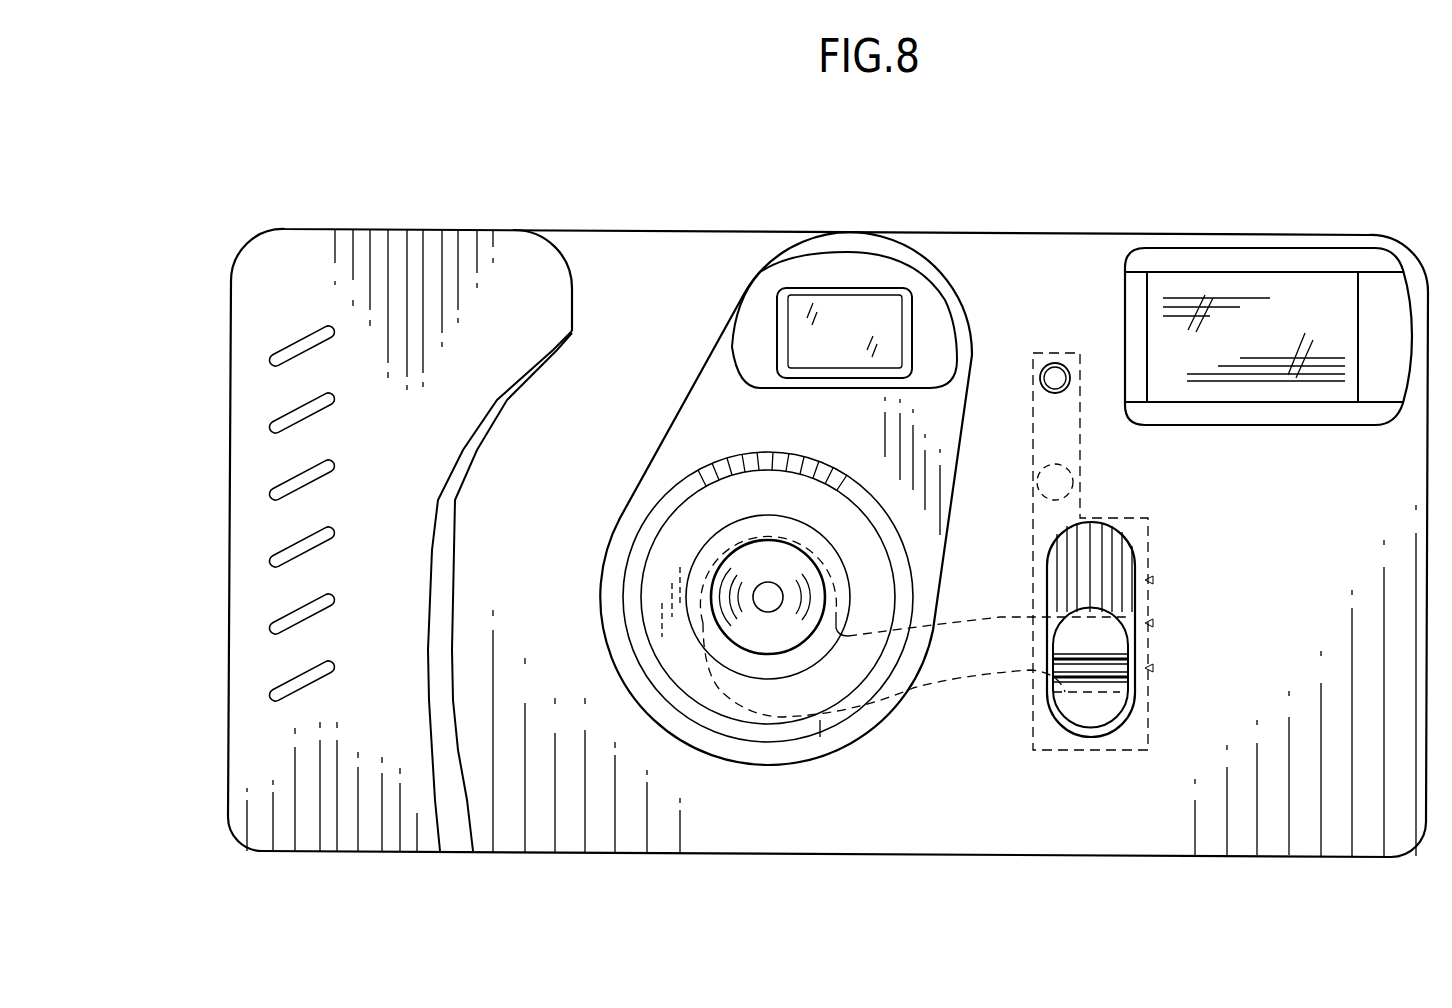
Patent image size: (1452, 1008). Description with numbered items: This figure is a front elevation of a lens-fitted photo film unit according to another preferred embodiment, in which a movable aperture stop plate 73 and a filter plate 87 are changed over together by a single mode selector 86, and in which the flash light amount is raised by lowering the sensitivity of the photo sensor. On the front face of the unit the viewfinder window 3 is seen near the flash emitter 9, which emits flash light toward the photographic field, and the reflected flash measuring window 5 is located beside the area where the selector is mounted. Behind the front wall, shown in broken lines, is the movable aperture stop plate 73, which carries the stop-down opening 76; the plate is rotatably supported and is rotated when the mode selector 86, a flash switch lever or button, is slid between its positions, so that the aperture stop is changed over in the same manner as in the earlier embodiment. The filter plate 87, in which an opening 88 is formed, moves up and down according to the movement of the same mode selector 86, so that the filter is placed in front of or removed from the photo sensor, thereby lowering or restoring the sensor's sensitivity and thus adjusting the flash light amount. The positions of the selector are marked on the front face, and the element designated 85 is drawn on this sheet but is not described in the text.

The front cover 85 is at (388, 220).
The viewfinder window 3 is at (850, 315).
The flash emitter 9 is at (1263, 322).
The reflected flash measuring window 5 is at (1054, 363).
The filter plate 87 is at (1063, 415).
The opening 88 is at (1037, 487).
The mode selector 86 is at (1093, 673).
The movable aperture stop plate 73 is at (970, 653).
The stop-down opening 76 is at (767, 614).